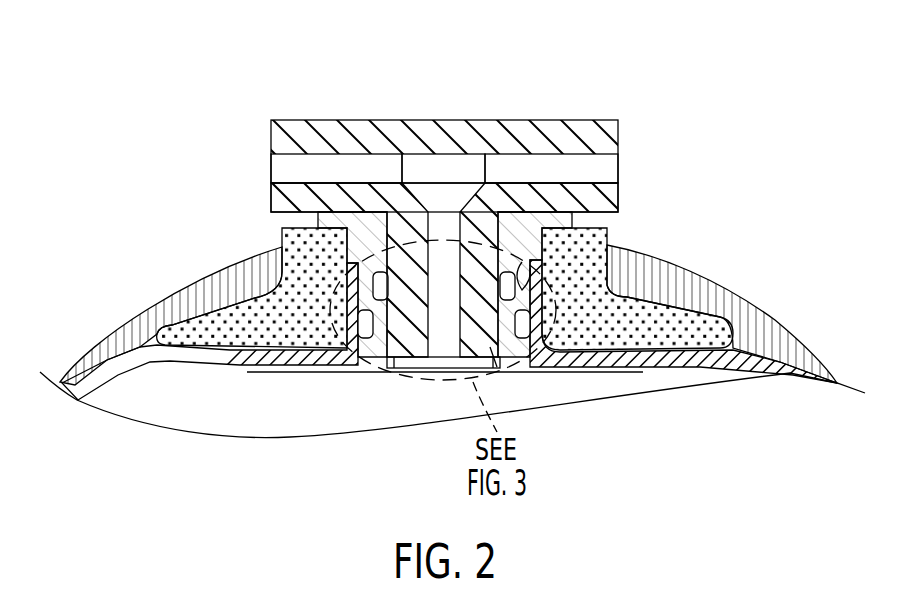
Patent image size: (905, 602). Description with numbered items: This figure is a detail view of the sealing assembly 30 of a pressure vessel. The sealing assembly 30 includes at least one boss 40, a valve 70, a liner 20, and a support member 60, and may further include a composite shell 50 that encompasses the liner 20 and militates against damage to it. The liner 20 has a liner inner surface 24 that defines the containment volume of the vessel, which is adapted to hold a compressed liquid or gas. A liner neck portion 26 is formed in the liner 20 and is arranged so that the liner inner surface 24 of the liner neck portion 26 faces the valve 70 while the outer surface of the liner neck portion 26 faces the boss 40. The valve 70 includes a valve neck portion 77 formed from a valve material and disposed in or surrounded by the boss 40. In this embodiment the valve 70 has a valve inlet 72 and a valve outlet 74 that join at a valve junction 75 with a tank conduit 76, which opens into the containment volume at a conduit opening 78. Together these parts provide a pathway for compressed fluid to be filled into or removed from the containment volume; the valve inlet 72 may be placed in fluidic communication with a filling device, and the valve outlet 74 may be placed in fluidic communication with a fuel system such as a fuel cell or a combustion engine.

The liner 20 is at (82, 393).
The liner inner surface 24 is at (350, 420).
The liner neck portion 26 is at (528, 283).
The sealing assembly 30 is at (680, 64).
The boss 40 is at (597, 240).
The composite shell 50 is at (150, 315).
The support member 60 is at (325, 222).
The valve 70 is at (550, 130).
The valve inlet 72 is at (280, 168).
The valve outlet 74 is at (605, 168).
The valve junction 75 is at (443, 168).
The tank conduit 76 is at (437, 350).
The valve neck portion 77 is at (497, 367).
The conduit opening 78 is at (455, 365).